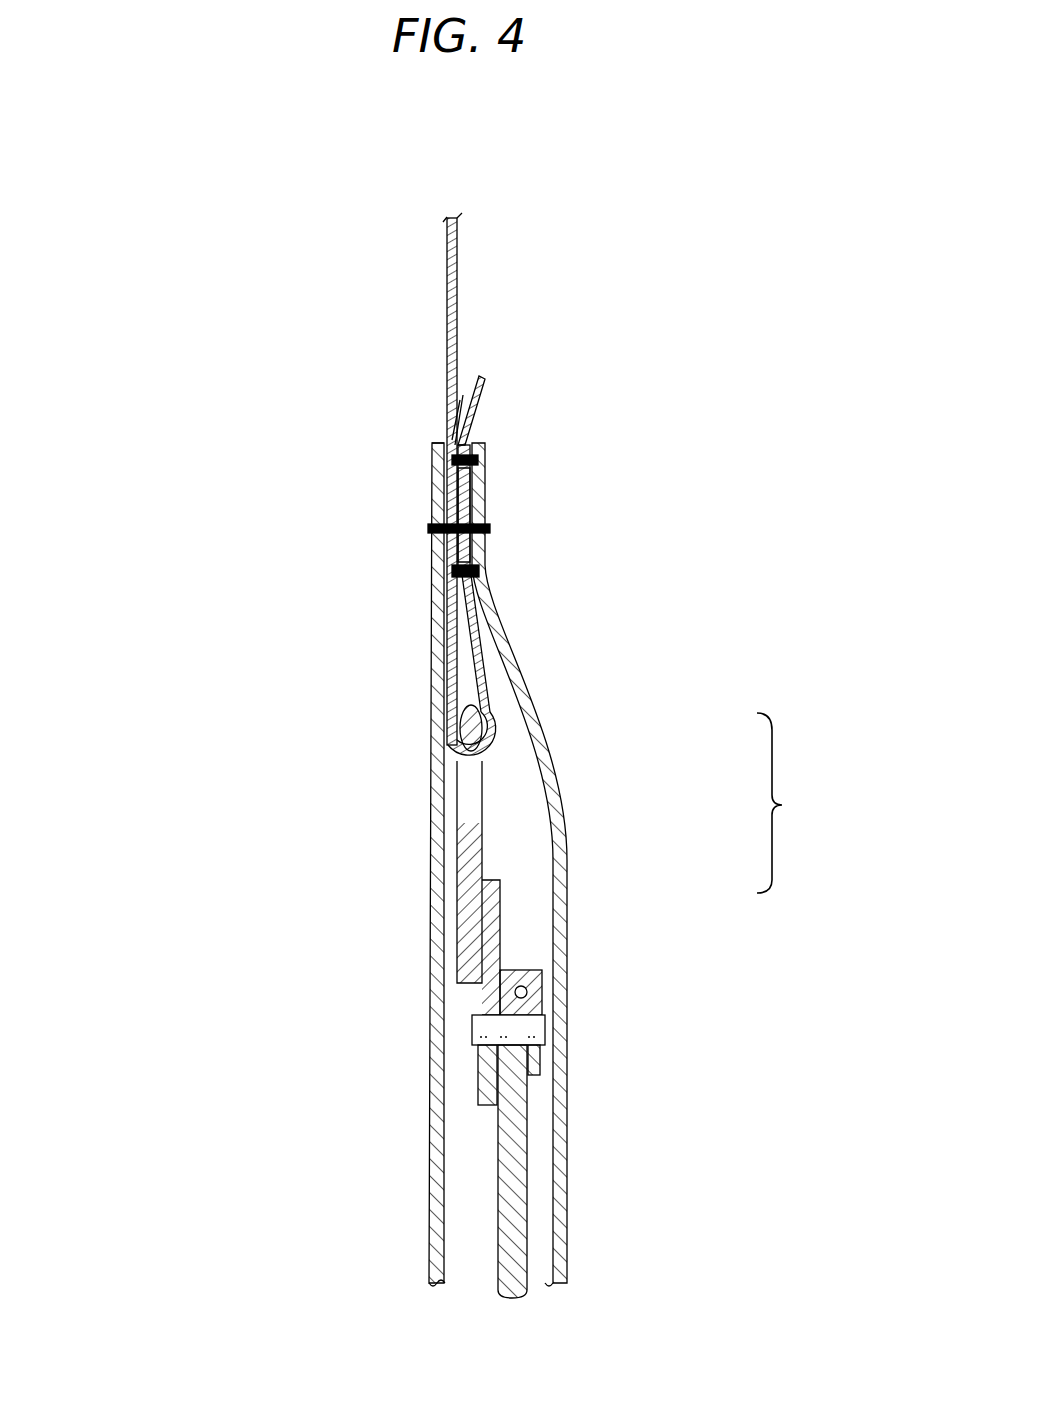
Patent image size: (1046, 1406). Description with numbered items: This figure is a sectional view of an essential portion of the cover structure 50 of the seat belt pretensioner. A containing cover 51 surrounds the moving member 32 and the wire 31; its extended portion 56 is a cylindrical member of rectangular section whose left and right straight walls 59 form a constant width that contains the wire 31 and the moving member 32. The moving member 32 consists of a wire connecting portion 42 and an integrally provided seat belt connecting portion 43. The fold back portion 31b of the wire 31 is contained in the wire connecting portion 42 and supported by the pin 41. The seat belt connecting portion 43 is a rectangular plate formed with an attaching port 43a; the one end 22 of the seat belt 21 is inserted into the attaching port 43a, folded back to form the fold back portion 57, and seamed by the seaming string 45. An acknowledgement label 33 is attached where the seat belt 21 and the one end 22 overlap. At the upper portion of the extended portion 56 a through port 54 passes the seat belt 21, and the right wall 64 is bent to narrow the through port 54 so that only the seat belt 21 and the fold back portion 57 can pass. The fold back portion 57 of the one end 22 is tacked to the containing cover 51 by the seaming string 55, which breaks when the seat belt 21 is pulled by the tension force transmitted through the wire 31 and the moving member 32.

The cover structure 50 is at (168, 268).
The seat belt 21 is at (447, 276).
The acknowledgement label 33 is at (487, 400).
The through port 54 is at (455, 412).
The seaming string 45 is at (481, 462).
The one end of the seat belt 22 is at (481, 480).
The right wall 64 is at (481, 500).
The seaming string (tacking string) 55 is at (428, 528).
The fold back portion 57 is at (502, 632).
The containing cover 51 is at (422, 762).
The seat belt connecting portion 43 is at (489, 722).
The moving member 32 is at (796, 803).
The attaching port 43a is at (460, 820).
The wire connecting portion 42 is at (548, 968).
The fold back portion of the wire 31b is at (470, 995).
The pin 41 is at (546, 1032).
The extended portion 56 is at (428, 1112).
The straight walls 59 is at (429, 1165).
The wire 31 is at (512, 1235).